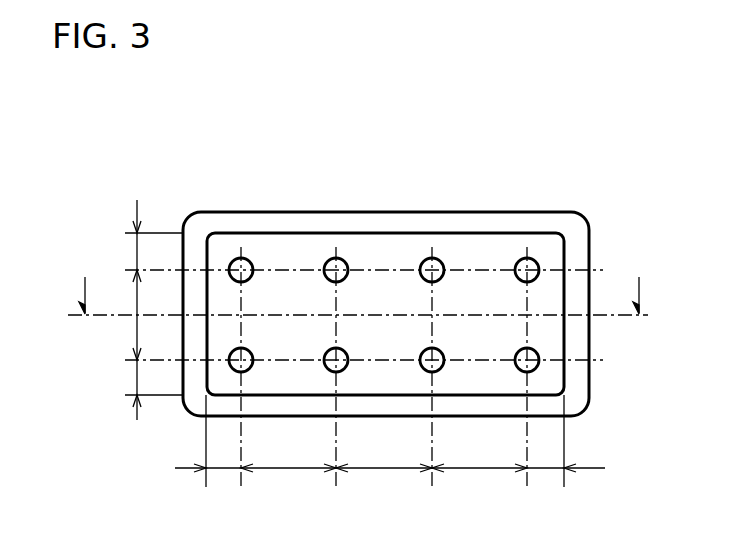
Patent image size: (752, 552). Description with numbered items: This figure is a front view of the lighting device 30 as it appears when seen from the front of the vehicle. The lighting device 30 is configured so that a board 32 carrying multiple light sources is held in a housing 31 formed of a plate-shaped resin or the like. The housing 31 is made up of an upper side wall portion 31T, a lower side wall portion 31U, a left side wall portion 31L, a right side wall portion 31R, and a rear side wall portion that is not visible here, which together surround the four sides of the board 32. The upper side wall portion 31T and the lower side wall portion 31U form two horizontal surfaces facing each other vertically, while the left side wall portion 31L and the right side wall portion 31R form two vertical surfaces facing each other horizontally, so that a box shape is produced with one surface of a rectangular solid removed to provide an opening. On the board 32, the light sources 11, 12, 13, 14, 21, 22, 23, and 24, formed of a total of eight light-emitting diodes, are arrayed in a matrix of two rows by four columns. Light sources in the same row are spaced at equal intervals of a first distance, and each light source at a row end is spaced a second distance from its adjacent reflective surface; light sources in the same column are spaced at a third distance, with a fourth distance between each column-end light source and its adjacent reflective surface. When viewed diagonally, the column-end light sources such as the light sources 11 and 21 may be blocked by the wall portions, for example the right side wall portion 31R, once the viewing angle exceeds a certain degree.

The lighting device 30 is at (296, 138).
The housing 31 is at (572, 210).
The upper side wall portion 31T is at (401, 222).
The lower side wall portion 31U is at (400, 408).
The right side wall portion 31R is at (193, 330).
The left side wall portion 31L is at (588, 341).
The board 32 is at (465, 243).
The light source 11 is at (250, 279).
The light source 12 is at (346, 278).
The light source 13 is at (423, 264).
The light source 14 is at (517, 278).
The light source 21 is at (252, 353).
The light source 22 is at (344, 370).
The light source 23 is at (421, 352).
The light source 24 is at (517, 352).